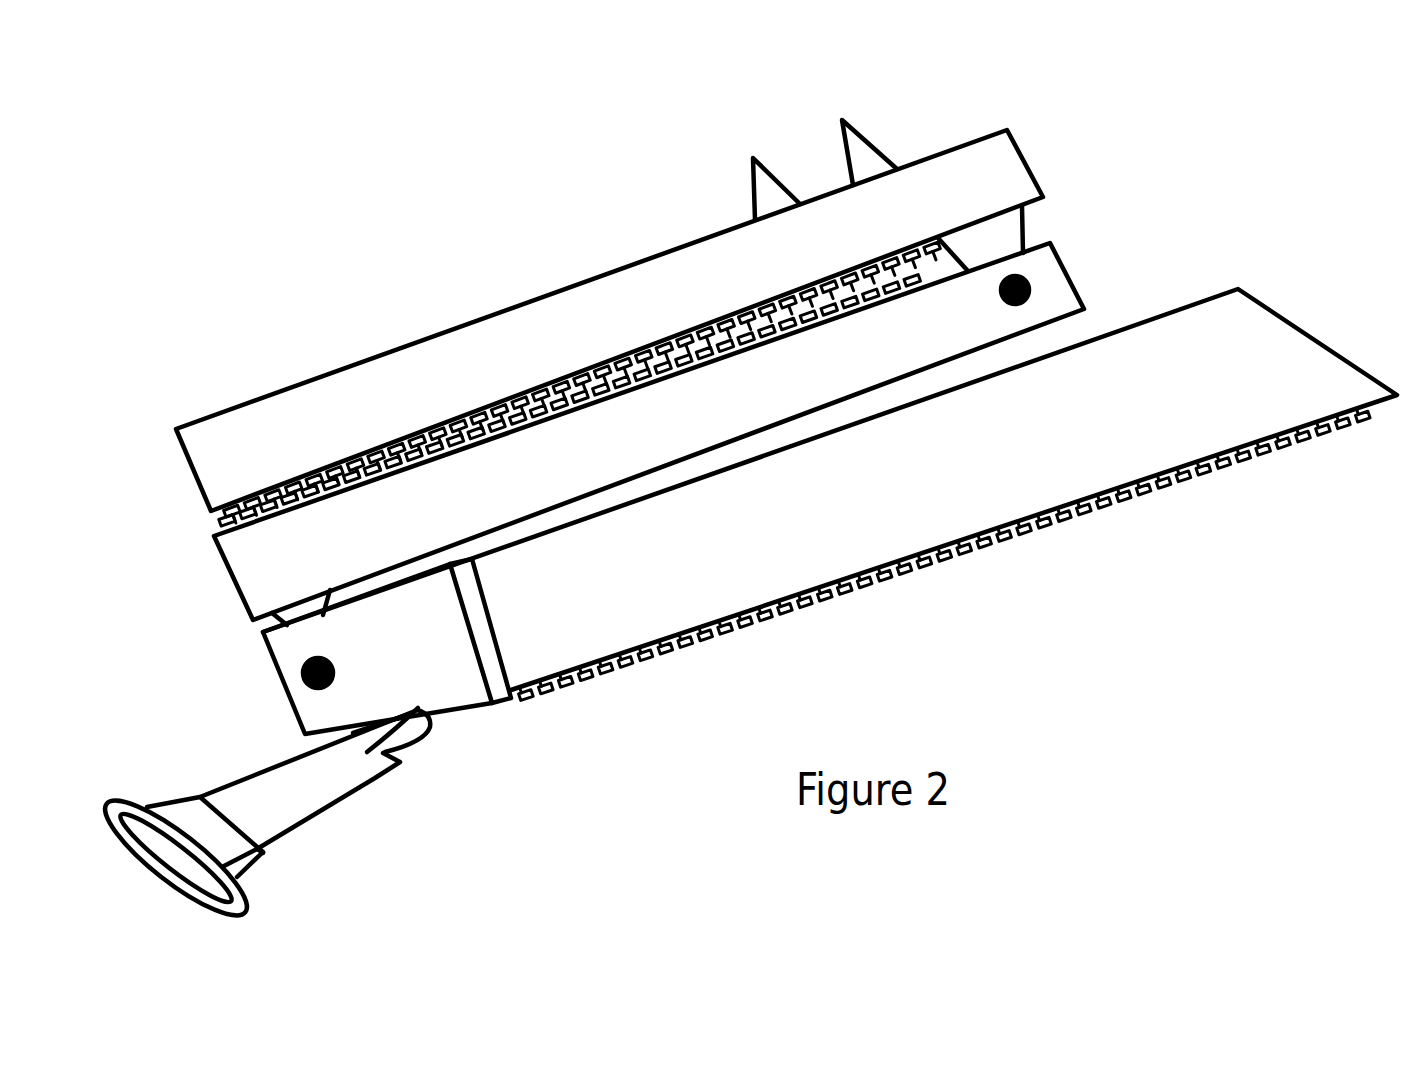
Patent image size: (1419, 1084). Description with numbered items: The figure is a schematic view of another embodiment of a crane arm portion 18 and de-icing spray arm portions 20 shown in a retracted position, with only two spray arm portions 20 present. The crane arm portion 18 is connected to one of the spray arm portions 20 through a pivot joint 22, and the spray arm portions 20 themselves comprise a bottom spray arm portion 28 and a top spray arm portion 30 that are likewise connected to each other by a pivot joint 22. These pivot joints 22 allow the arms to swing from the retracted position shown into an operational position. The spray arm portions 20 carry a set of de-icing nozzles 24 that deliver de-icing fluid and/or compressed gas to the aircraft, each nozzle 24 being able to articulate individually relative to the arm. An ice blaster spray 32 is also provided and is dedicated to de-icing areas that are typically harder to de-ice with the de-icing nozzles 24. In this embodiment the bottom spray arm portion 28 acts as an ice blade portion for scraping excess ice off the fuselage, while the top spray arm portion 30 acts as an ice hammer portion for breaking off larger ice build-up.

The crane arm portion 18 is at (1290, 345).
The spray arm portion 20 is at (1008, 170).
The pivot joint 22 is at (1023, 277).
The de-icing nozzle 24 is at (863, 158).
The bottom spray arm portion 28 is at (570, 401).
The top spray arm portion 30 is at (584, 383).
The ice blaster spray 32 is at (280, 813).